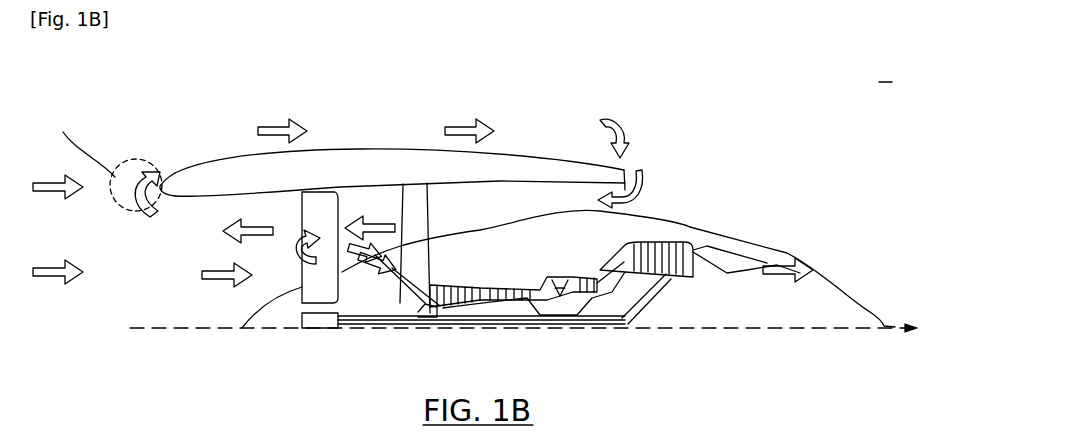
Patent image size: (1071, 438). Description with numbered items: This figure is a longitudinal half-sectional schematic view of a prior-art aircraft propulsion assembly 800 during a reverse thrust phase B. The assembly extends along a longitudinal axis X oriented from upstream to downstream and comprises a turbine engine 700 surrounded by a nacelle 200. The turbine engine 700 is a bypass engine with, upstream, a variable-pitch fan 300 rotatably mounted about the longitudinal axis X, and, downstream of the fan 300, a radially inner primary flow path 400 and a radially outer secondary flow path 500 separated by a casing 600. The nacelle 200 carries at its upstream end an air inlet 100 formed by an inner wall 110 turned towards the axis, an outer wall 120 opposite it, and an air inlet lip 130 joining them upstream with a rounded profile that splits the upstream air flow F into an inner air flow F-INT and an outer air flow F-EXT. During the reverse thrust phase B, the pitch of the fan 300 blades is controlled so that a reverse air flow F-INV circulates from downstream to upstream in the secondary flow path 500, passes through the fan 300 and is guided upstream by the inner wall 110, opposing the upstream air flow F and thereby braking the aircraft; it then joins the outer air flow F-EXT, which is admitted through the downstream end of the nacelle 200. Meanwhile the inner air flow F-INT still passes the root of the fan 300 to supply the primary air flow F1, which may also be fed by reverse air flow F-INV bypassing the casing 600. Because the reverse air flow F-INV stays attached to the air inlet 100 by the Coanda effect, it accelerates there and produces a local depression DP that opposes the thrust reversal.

The air inlet 100 is at (227, 97).
The inner wall 110 is at (200, 192).
The outer wall 120 is at (183, 166).
The air inlet lip 130 is at (158, 170).
The nacelle 200 is at (628, 166).
The fan 300 is at (318, 335).
The primary flow path 400 is at (443, 312).
The secondary flow path 500 is at (520, 214).
The casing 600 is at (520, 265).
The turbine engine 700 is at (740, 220).
The aircraft propulsion assembly 800 is at (797, 122).
The reverse thrust phase B is at (885, 73).
The longitudinal axis X is at (537, 330).
The upstream air flow F is at (58, 218).
The primary air flow F1 is at (579, 266).
The outer air flow F-EXT is at (450, 129).
The inner air flow F-INT is at (227, 286).
The reverse air flow F-INV is at (407, 206).
The local depression DP is at (105, 160).